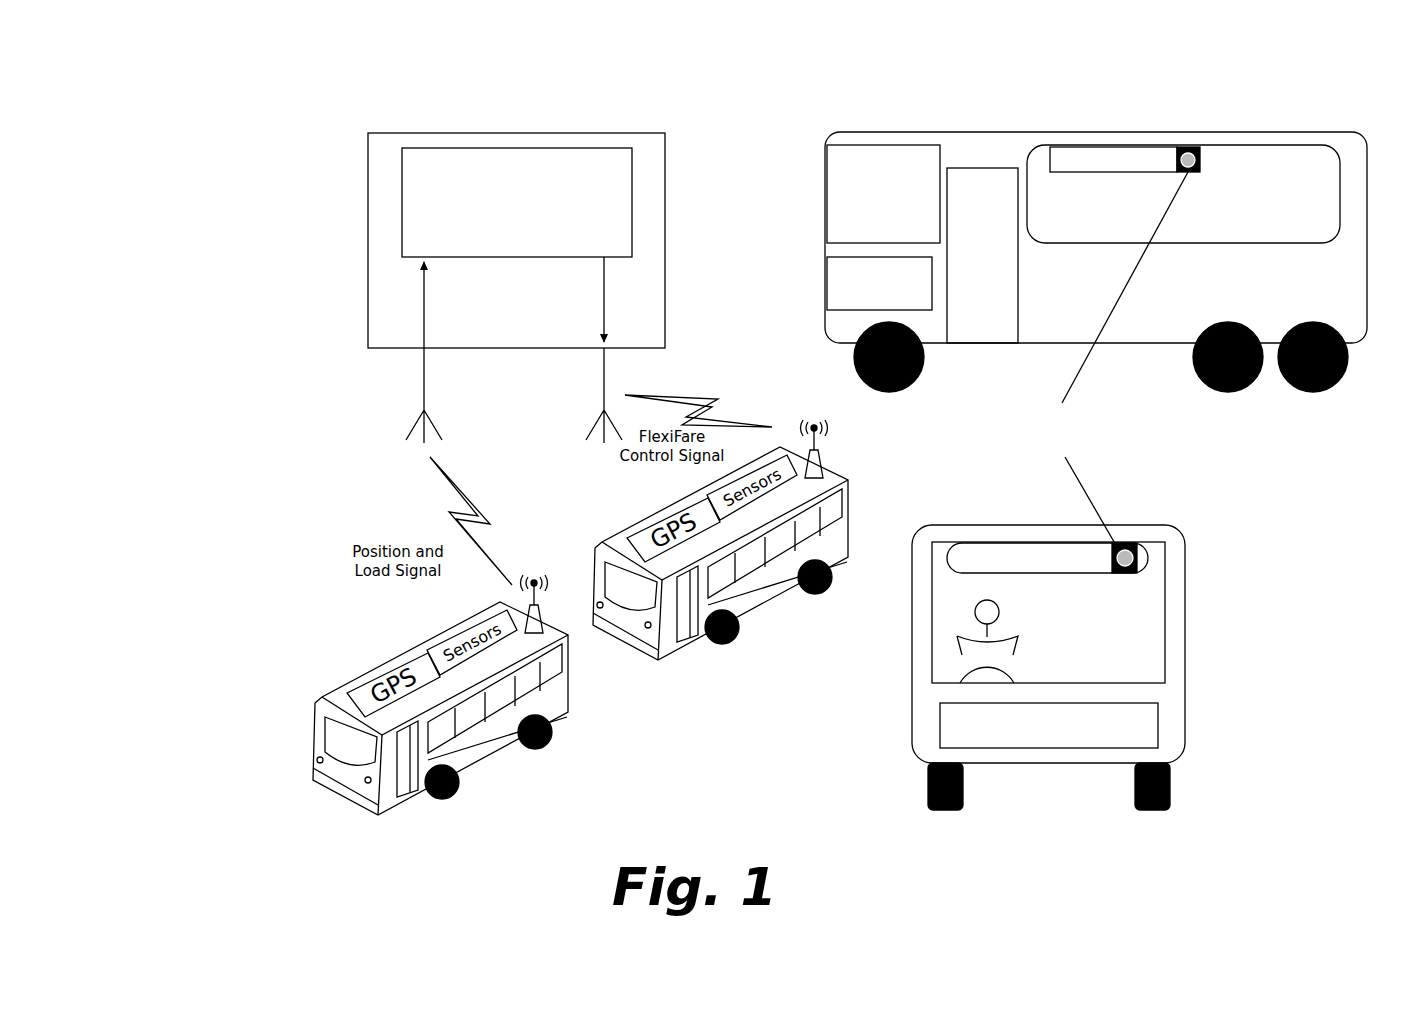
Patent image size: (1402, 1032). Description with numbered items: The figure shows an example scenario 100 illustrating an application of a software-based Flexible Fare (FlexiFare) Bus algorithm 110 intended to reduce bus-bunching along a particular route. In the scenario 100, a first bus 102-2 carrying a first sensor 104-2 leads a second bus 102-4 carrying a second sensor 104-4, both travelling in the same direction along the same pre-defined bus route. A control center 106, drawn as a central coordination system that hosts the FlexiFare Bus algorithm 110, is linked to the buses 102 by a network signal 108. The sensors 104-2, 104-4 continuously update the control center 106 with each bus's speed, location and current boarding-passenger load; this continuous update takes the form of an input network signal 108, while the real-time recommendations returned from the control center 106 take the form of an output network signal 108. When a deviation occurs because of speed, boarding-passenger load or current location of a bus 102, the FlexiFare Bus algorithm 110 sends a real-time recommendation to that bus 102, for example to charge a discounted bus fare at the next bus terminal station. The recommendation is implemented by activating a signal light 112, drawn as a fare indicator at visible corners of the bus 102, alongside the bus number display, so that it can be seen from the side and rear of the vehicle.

The scenario 100 is at (238, 83).
The bus 102 is at (262, 533).
The first bus 102-2 is at (335, 665).
The second bus 102-4 is at (610, 520).
The first sensor 104-2 is at (514, 568).
The second sensor 104-4 is at (800, 415).
The control center 106 is at (337, 231).
The network signal 108 is at (418, 378).
The Flexible Fare (FlexiFare) Bus algorithm 110 is at (500, 140).
The signal light 112 is at (1177, 138).